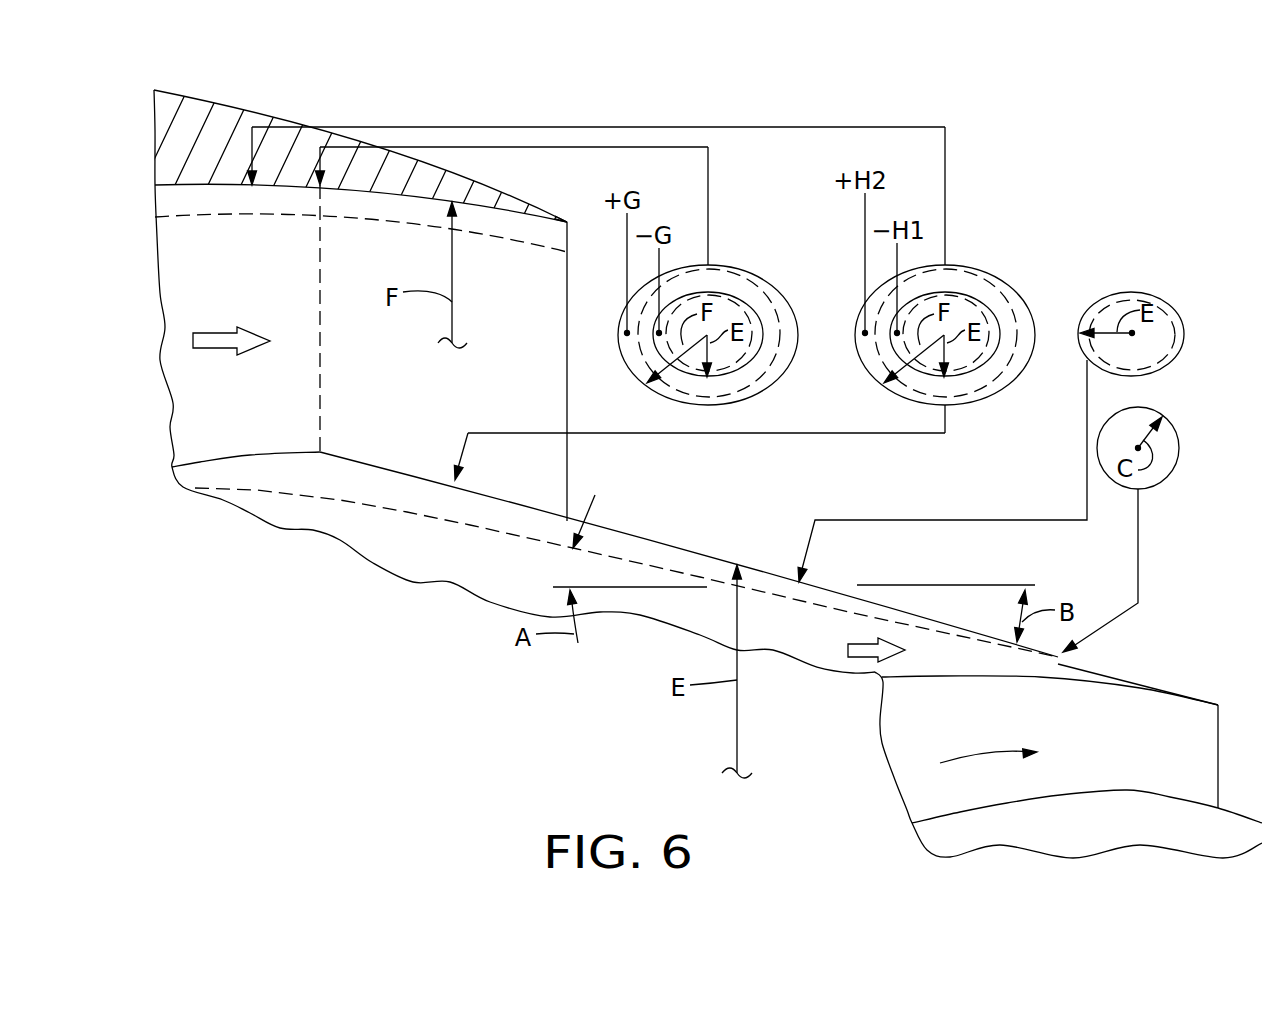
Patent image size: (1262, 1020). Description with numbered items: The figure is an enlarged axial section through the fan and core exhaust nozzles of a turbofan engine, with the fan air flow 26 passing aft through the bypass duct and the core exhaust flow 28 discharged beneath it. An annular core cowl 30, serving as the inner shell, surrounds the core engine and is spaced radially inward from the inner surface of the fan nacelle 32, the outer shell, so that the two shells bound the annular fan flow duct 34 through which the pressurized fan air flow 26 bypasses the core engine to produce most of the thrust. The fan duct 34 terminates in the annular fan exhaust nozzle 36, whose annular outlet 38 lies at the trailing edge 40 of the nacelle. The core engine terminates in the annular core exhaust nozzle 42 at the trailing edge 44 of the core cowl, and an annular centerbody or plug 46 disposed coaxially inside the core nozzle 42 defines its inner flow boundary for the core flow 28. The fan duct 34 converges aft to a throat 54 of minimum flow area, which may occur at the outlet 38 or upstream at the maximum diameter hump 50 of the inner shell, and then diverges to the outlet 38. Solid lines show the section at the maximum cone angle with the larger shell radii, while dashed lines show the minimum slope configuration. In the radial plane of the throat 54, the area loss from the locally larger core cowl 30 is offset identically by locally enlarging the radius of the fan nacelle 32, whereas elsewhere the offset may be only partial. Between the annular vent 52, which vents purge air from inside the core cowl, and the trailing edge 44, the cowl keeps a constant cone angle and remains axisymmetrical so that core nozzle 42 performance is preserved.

The airflow direction 26 is at (212, 333).
The secondary airflow direction 28 is at (978, 753).
The core cowl 30 is at (748, 307).
The fan nacelle 32 is at (417, 197).
The fan flow duct 34 is at (229, 267).
The fan exhaust nozzle 36 is at (492, 84).
The annular outlet 38 is at (567, 385).
The trailing edge 40 is at (570, 222).
The core exhaust nozzle 42 is at (1107, 756).
The trailing edge 44 is at (1222, 705).
The centerbody or plug 46 is at (1094, 837).
The maximum diameter hump 50 is at (320, 452).
The annular vent 52 is at (1076, 659).
The throat 54 is at (320, 372).